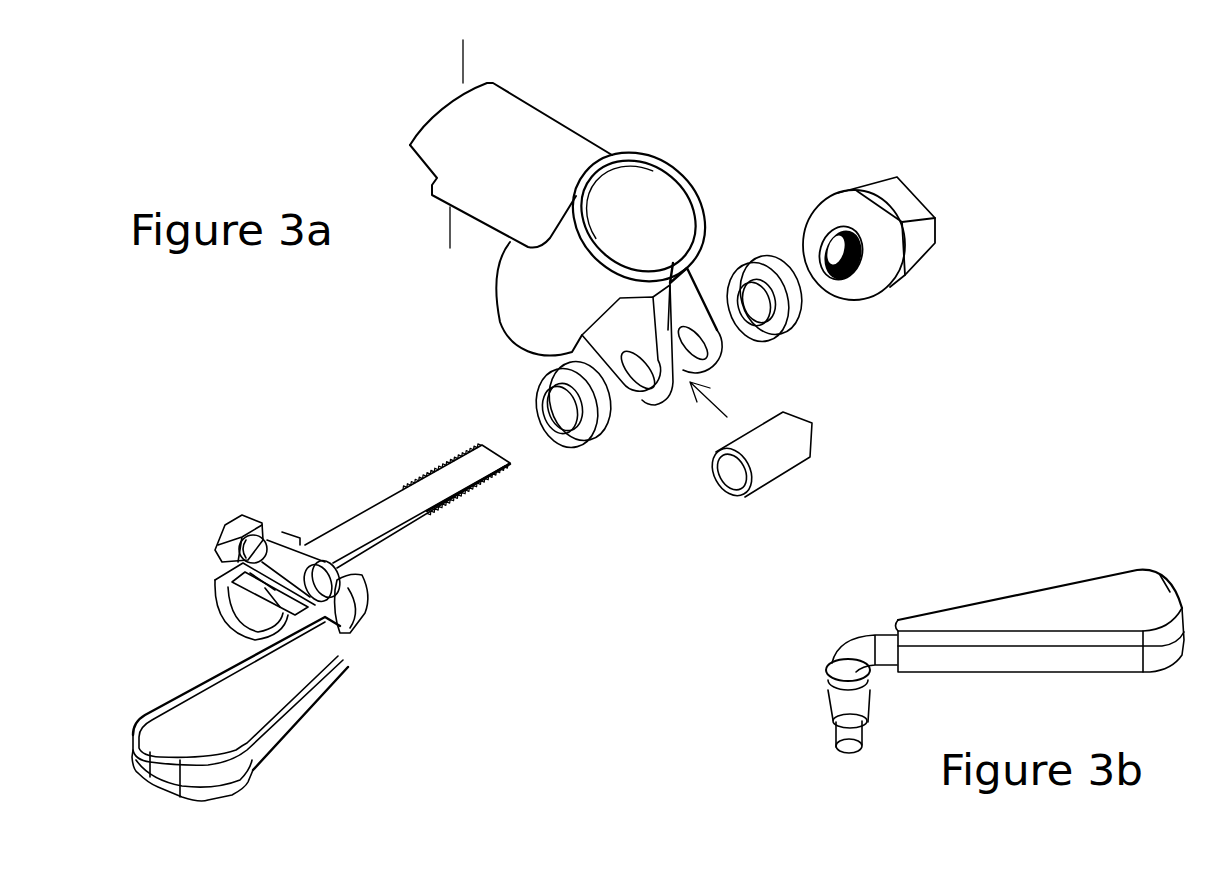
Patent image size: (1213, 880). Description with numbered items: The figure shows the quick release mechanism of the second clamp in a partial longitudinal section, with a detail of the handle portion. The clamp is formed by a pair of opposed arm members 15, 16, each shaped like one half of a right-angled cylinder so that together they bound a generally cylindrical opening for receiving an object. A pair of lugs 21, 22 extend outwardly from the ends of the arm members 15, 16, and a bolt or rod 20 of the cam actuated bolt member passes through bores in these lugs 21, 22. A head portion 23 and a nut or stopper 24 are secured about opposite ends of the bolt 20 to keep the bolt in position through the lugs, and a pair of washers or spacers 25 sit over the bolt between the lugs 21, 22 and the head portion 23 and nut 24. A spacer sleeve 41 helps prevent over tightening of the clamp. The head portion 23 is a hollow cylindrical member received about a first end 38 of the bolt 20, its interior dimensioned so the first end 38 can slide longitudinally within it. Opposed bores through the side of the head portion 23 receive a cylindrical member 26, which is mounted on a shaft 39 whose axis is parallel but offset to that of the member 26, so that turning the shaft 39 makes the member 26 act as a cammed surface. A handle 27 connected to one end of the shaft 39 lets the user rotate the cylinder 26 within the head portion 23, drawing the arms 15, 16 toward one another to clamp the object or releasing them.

In FIG. 3A, the arm member 15 is at (683, 180).
In FIG. 3A, the arm member 16 is at (532, 285).
In FIG. 3A, the bolt or rod 20 is at (445, 510).
In FIG. 3A, the lug 21 is at (722, 358).
In FIG. 3A, the lug 22 is at (647, 400).
In FIG. 3A, the head portion 23 is at (238, 620).
In FIG. 3A, the nut or stopper 24 is at (893, 277).
In FIG. 3A, the washer or spacer 25 is at (595, 437).
In FIG. 3A, the cylindrical member 26 is at (287, 568).
In FIG. 3B, the cylindrical member 26 is at (843, 708).
In FIG. 3A, the handle 27 is at (220, 733).
In FIG. 3B, the handle 27 is at (1092, 602).
In FIG. 3A, the first end of bolt 38 is at (267, 590).
In FIG. 3A, the shaft 39 is at (263, 527).
In FIG. 3B, the shaft 39 is at (863, 735).
In FIG. 3A, the spacer sleeve 41 is at (780, 455).